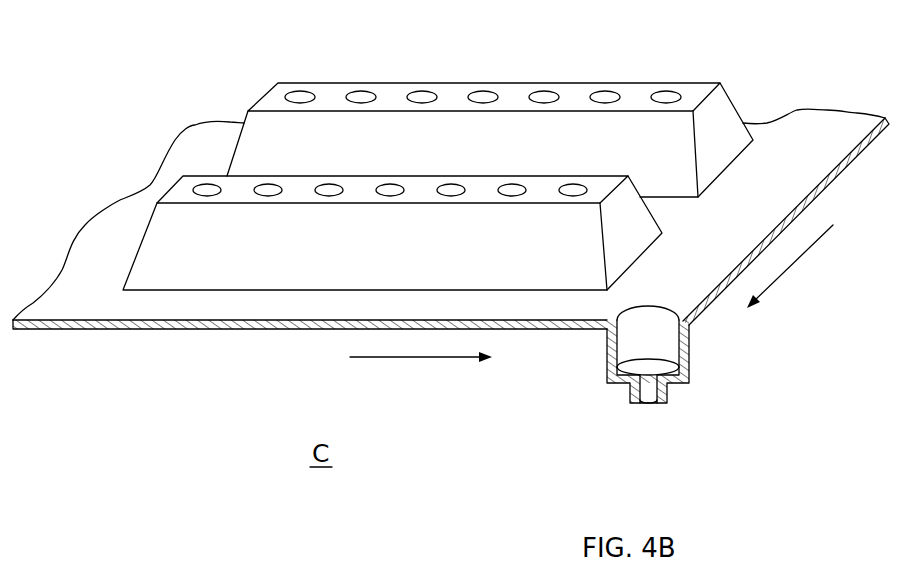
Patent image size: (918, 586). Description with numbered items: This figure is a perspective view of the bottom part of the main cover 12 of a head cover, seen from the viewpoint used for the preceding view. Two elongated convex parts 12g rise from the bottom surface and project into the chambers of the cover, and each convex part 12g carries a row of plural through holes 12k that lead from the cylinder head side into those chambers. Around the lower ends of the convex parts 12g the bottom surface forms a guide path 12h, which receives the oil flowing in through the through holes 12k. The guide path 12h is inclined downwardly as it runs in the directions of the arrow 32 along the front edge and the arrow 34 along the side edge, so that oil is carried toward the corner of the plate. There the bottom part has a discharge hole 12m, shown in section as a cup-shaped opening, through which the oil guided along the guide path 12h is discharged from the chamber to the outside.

The main cover 12 is at (843, 87).
The convex part 12g is at (718, 115).
The guide path 12h is at (843, 141).
The through hole 12k is at (666, 96).
The discharge hole 12m is at (655, 336).
The arrow 32 is at (408, 357).
The arrow 34 is at (793, 268).